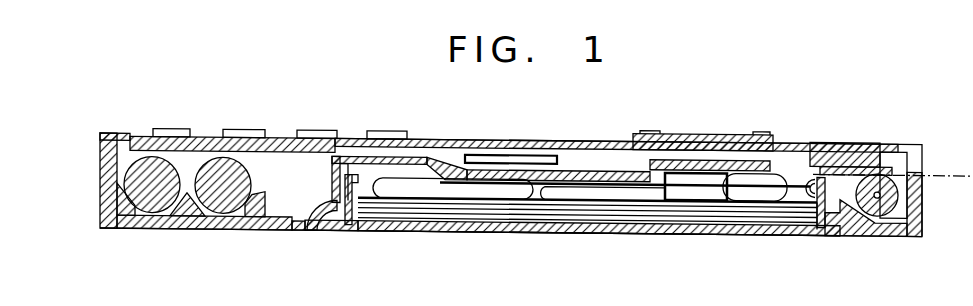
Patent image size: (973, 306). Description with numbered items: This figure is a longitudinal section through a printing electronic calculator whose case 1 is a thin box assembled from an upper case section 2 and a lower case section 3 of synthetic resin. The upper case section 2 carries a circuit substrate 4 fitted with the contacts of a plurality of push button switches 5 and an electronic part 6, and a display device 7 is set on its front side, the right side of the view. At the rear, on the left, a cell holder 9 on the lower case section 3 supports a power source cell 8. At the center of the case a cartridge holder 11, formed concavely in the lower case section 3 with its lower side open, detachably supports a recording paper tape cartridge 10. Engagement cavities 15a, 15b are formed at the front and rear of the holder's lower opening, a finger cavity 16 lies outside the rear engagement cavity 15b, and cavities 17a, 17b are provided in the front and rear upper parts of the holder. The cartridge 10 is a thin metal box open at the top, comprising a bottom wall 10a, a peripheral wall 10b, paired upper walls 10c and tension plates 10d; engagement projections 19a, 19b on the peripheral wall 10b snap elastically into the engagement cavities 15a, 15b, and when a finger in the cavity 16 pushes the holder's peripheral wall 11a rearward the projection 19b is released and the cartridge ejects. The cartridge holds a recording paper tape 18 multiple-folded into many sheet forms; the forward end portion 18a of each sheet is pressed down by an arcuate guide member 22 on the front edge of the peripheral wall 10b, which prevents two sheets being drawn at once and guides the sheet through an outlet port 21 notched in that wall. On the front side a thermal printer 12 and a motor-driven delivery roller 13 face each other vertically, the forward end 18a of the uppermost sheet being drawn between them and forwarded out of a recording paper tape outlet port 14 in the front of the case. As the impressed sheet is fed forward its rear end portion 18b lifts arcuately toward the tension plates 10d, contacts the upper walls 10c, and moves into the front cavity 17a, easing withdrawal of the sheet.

The case 1 is at (85, 165).
The upper case section 2 is at (122, 136).
The lower case section 3 is at (100, 218).
The circuit substrate 4 is at (518, 140).
The push button switches 5 is at (300, 128).
The electronic part 6 is at (548, 151).
The display device 7 is at (757, 125).
The power source cell 8 is at (207, 207).
The cell holder 9 is at (274, 214).
The recording paper tape cartridge 10 is at (630, 232).
The bottom wall 10a is at (588, 228).
The peripheral wall 10b is at (352, 230).
The upper walls 10c is at (590, 166).
The tension plates 10d is at (374, 160).
The cartridge holder 11 is at (695, 180).
The peripheral wall of cartridge holder 11a is at (332, 170).
The printer 12 is at (870, 136).
The delivery roller 13 is at (893, 200).
The recording paper tape outlet port 14 is at (922, 160).
The engagement cavity 15a is at (852, 226).
The engagement cavity 15b is at (349, 222).
The cavity 16 is at (322, 226).
The cavity 17a is at (712, 130).
The cavity 17b is at (440, 160).
The recording paper tape 18 is at (657, 210).
The forward end portion 18a is at (797, 205).
The rear end portion 18b is at (380, 212).
The engagement projection 19a is at (830, 222).
The engagement projection 19b is at (345, 193).
The recording paper tape outlet port 21 is at (786, 192).
The recording paper tape guide member 22 is at (827, 176).